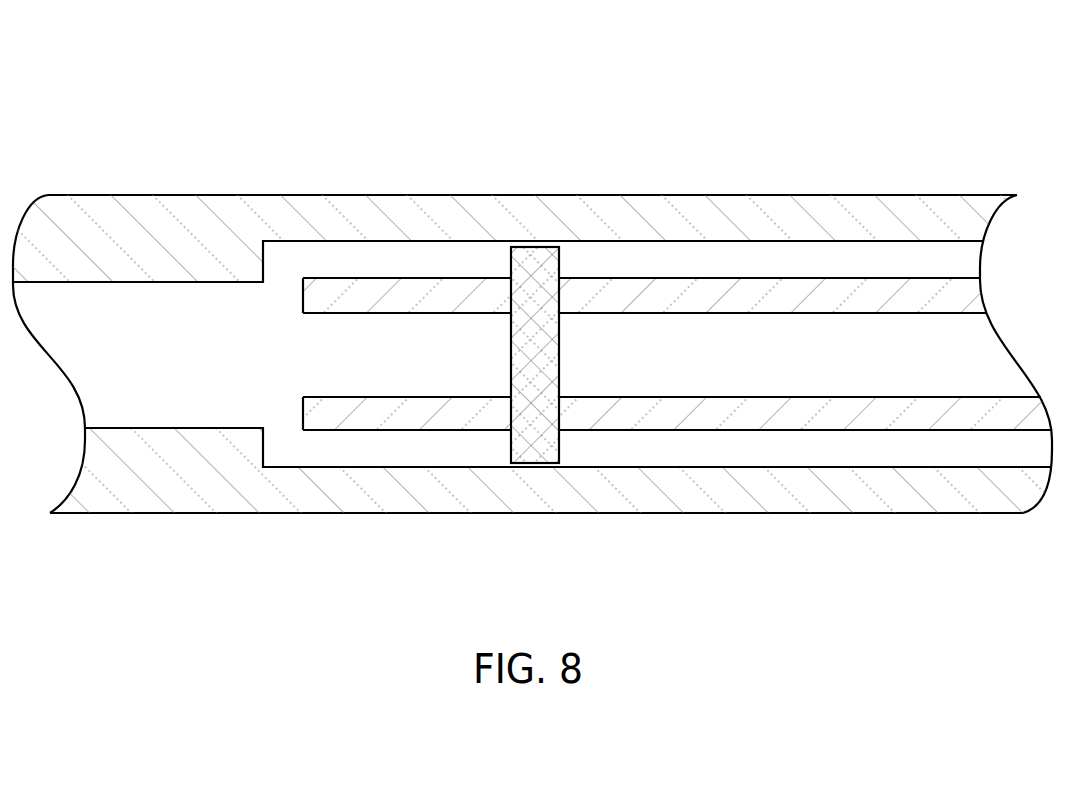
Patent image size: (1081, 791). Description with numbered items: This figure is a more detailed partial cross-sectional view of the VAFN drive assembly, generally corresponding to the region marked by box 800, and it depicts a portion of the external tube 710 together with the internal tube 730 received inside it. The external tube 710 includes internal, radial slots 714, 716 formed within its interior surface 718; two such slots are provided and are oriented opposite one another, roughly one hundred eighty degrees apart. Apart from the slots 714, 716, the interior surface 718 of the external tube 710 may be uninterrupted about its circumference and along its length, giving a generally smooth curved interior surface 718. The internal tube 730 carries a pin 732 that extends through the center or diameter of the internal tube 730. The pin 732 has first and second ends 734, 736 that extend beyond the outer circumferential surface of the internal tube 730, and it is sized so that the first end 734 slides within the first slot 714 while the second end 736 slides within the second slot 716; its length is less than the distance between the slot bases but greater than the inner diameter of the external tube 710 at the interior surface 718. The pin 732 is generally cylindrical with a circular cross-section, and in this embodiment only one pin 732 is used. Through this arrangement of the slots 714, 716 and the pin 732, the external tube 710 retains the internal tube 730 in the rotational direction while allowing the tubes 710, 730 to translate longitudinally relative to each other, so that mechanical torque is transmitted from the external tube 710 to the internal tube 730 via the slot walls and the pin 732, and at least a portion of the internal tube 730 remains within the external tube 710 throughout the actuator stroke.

The box 800 is at (140, 120).
The external tube 710 is at (213, 207).
The first slot 714 is at (653, 256).
The second slot 716 is at (692, 455).
The interior surface 718 is at (163, 283).
The internal tube 730 is at (407, 423).
The pin 732 is at (556, 347).
The first end 734 is at (530, 247).
The second end 736 is at (532, 466).